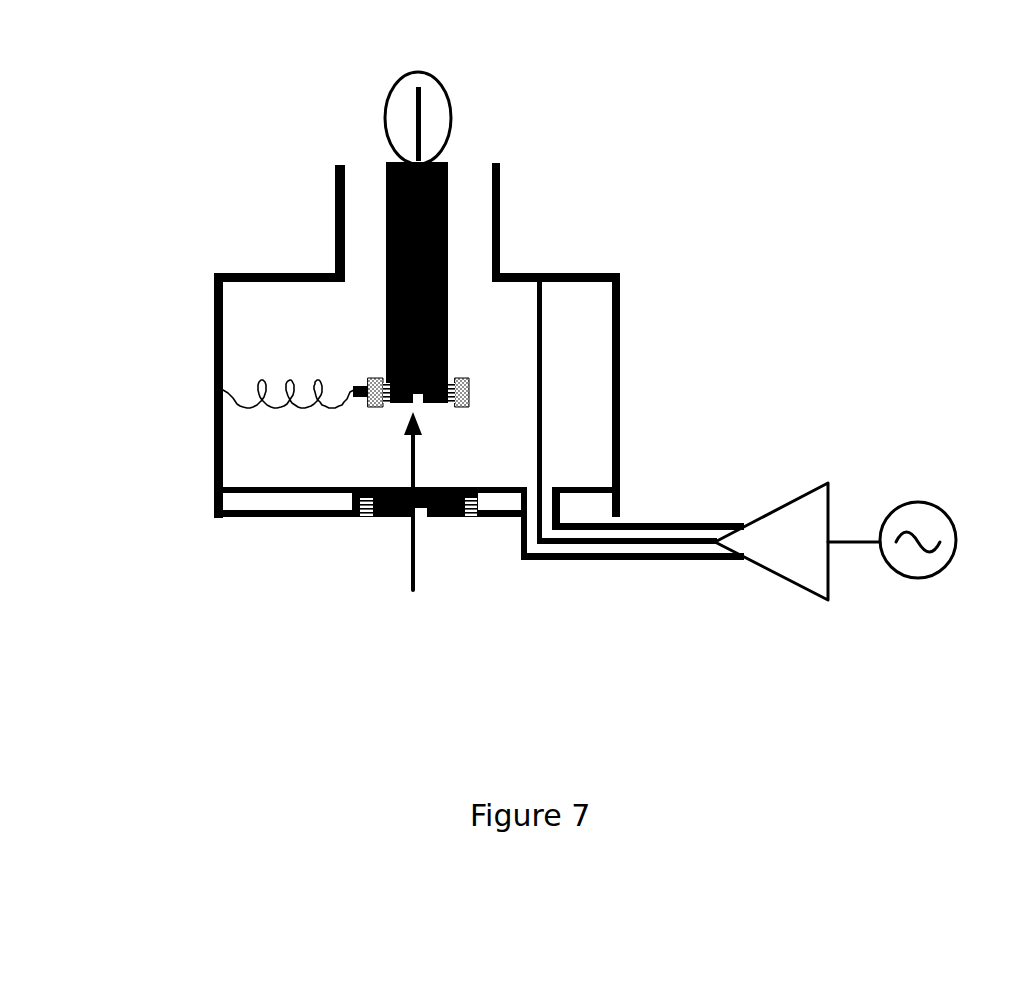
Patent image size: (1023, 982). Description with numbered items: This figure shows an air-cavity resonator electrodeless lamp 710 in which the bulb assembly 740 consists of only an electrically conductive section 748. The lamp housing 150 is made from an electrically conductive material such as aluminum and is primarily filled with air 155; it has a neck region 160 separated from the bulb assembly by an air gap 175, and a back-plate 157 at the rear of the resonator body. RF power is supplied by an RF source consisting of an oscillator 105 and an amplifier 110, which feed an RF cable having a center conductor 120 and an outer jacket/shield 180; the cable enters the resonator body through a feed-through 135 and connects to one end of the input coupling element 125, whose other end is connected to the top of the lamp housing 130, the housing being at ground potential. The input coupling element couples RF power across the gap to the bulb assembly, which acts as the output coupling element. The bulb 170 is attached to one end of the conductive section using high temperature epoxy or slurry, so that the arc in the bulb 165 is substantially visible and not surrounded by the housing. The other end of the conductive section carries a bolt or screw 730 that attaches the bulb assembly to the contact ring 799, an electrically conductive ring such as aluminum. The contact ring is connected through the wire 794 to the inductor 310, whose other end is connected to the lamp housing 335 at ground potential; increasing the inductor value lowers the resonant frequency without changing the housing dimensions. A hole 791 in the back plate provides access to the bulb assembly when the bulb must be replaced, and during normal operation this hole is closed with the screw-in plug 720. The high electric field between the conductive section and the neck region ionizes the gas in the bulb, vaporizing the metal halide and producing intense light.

The air-cavity resonator electrodeless lamp 710 is at (322, 95).
The bulb 170 is at (435, 78).
The arc in the bulb 165 is at (422, 118).
The air gap 175 is at (362, 187).
The neck region 160 is at (335, 237).
The air 155 is at (280, 298).
The electrically conductive section 748 is at (386, 326).
The lamp housing 335 is at (225, 392).
The contact ring 799 is at (469, 391).
The top of the lamp housing 130 is at (540, 276).
The lamp housing 150 is at (618, 305).
The input coupling element 125 is at (540, 347).
The back-plate 157 is at (215, 503).
The inductor 310 is at (283, 408).
The wire 794 is at (357, 398).
The bulb assembly 740 is at (412, 517).
The bolt or screw 730 is at (438, 405).
The screw-in plug 720 is at (385, 518).
The hole 791 is at (473, 518).
The feed-through 135 is at (533, 485).
The outer jacket/shield 180 is at (610, 560).
The center conductor 120 is at (673, 547).
The amplifier 110 is at (763, 572).
The oscillator 105 is at (940, 582).